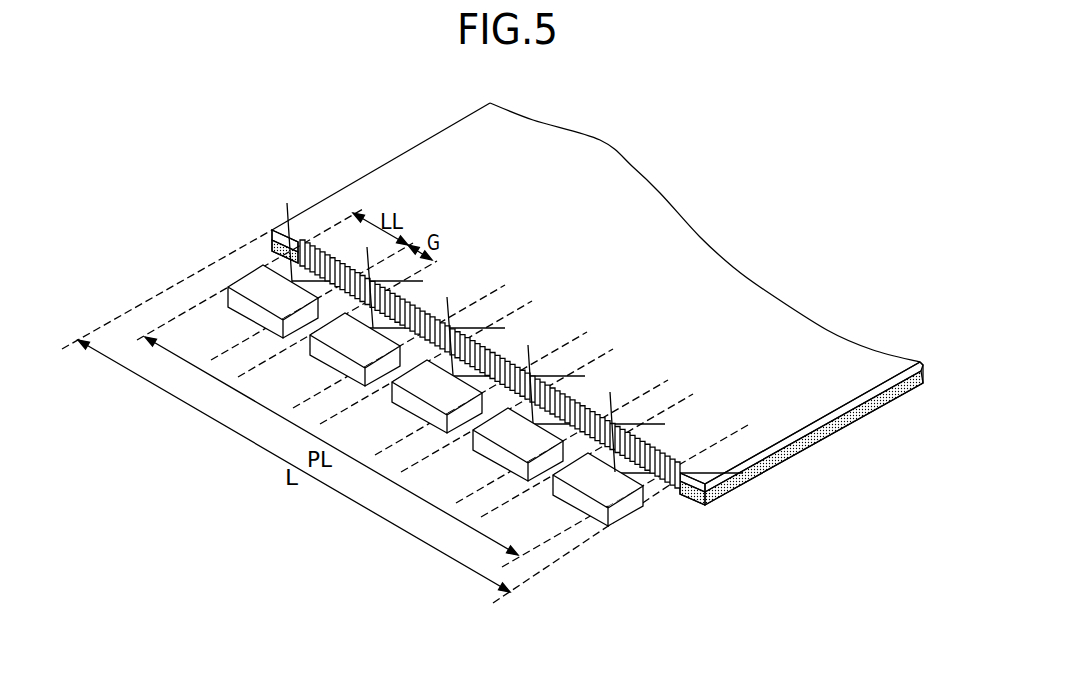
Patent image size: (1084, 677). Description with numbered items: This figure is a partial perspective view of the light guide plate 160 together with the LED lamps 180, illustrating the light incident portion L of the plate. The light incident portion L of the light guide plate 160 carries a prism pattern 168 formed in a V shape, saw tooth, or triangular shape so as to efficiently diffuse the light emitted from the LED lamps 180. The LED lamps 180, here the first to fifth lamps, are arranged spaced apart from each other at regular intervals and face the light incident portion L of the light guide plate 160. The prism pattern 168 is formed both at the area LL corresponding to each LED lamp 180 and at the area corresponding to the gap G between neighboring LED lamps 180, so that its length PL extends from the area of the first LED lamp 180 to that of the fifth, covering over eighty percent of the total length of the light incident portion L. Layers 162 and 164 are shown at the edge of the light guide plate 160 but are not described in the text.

The light guide plate 160 is at (597, 309).
The upper layer of substrate 162 is at (865, 397).
The lower layer of substrate 164 is at (815, 440).
The prism pattern 168 is at (677, 497).
The LED lamps 180 is at (623, 513).